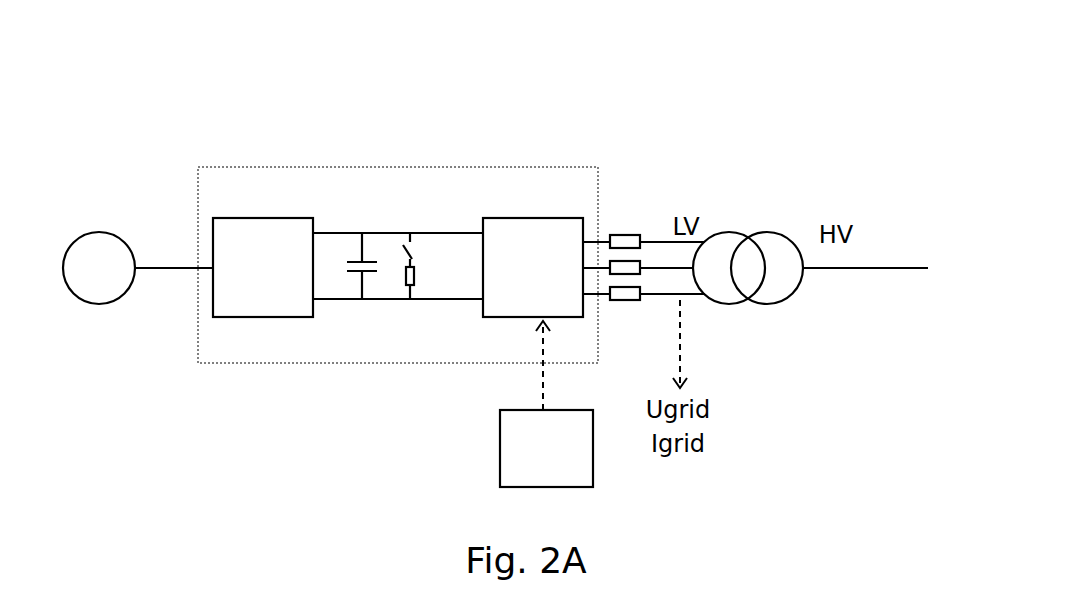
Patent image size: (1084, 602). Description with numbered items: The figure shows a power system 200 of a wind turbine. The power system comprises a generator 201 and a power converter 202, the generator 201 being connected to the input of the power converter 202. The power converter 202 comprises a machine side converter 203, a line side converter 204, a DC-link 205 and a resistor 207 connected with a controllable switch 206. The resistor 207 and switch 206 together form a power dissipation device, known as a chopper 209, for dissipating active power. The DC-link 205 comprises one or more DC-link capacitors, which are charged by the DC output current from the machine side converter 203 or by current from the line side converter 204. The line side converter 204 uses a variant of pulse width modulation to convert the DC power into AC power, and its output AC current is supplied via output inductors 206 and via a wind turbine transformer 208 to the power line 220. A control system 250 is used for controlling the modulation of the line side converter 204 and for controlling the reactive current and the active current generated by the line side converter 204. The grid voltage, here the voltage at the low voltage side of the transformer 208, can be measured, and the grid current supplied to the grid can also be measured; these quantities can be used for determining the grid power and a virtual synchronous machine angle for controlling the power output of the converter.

The power system 200 is at (407, 48).
The generator 201 is at (90, 232).
The power converter 202 is at (388, 161).
The machine side converter 203 is at (243, 217).
The line side converter 204 is at (518, 218).
The DC-link 205 is at (357, 245).
The controllable switch 206 is at (413, 248).
The resistor 207 is at (416, 275).
The wind turbine transformer 208 is at (740, 230).
The chopper 209 is at (394, 295).
The power line 220 is at (905, 258).
The control system 250 is at (500, 448).